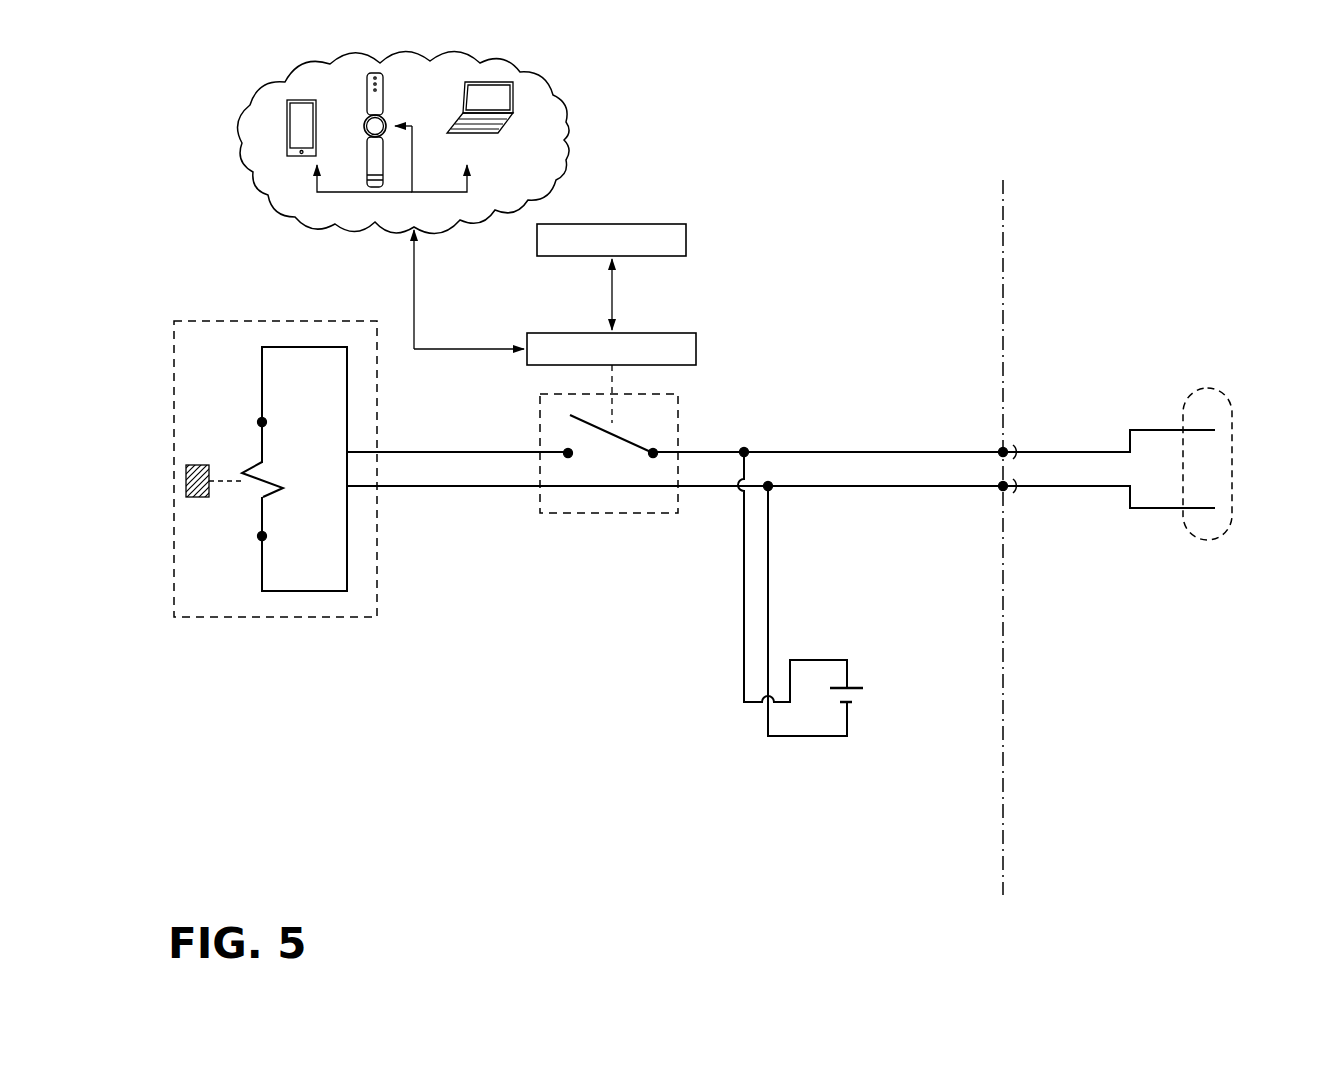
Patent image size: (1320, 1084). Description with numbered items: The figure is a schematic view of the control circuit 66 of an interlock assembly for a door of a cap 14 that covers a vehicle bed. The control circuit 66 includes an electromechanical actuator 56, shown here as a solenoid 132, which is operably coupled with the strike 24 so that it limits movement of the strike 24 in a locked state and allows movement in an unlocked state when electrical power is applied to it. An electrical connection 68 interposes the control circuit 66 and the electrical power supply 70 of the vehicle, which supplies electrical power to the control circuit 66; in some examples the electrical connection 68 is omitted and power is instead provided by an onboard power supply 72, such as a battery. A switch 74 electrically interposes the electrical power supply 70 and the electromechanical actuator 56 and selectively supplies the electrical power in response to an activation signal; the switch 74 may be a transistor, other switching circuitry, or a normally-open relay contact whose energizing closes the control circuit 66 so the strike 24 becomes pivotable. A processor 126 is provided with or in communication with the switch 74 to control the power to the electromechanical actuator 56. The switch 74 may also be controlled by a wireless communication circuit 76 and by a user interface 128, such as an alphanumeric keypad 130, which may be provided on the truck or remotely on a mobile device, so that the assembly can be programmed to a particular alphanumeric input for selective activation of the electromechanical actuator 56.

The cap 14 is at (1003, 822).
The strike 24 is at (196, 498).
The electromechanical actuator 56 is at (247, 456).
The control circuit 66 is at (482, 547).
The electrical connection 68 is at (1024, 442).
The electrical power supply 70 is at (875, 678).
The onboard power supply 72 is at (851, 703).
The switch 74 is at (607, 516).
The wireless communication circuit 76 is at (242, 143).
The processor 126 is at (696, 345).
The user interface 128 is at (366, 113).
The keypad 130 is at (686, 240).
The solenoid 132 is at (272, 495).